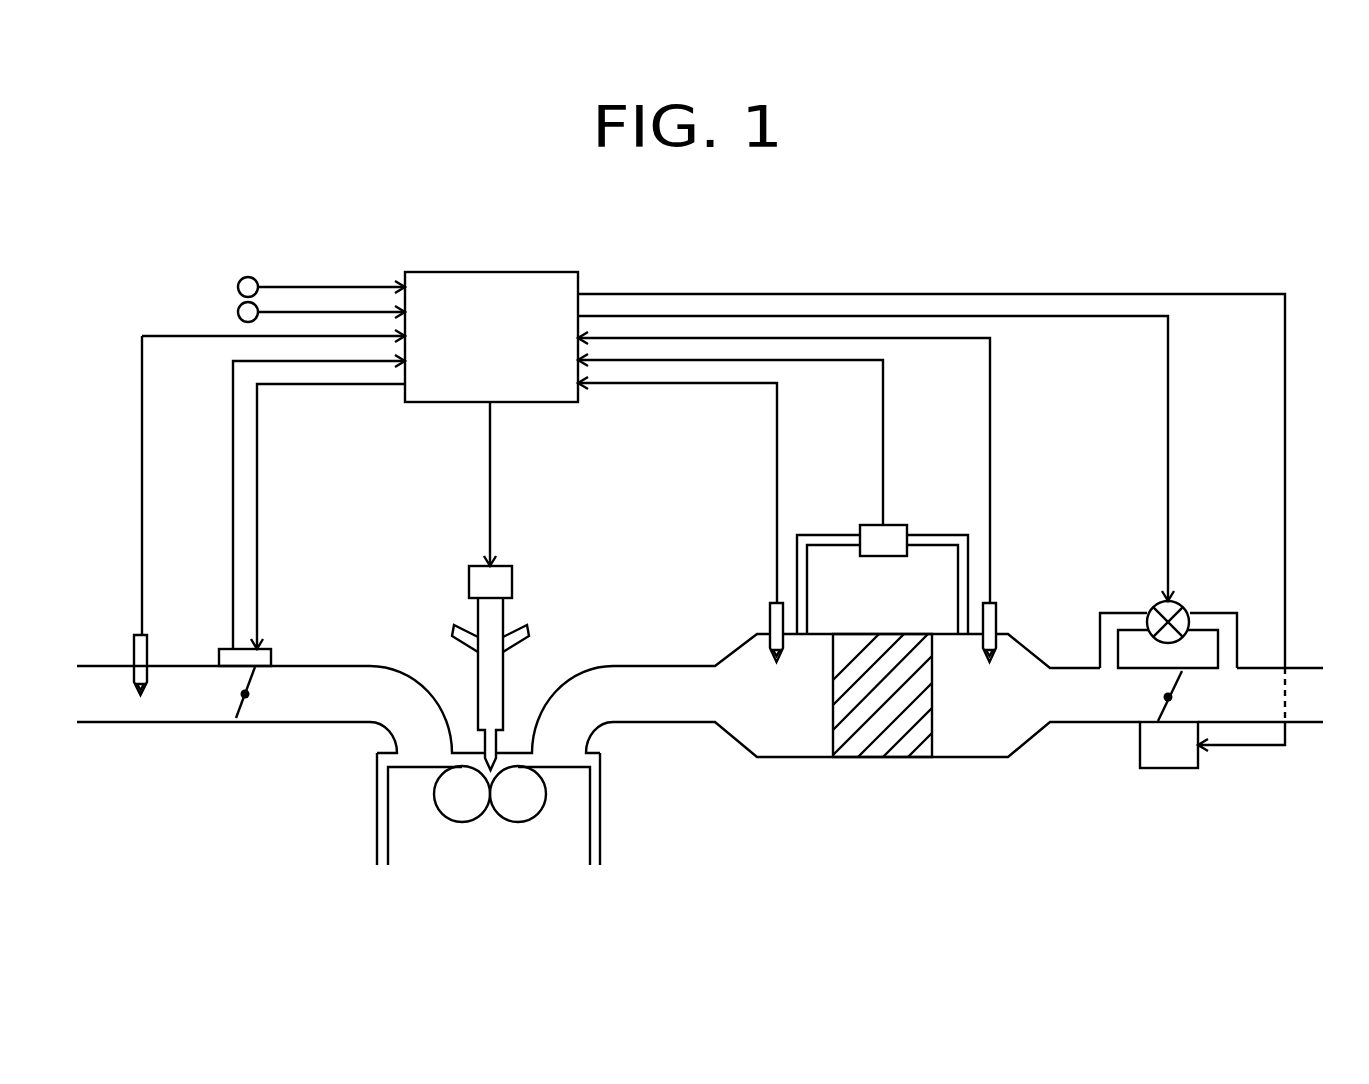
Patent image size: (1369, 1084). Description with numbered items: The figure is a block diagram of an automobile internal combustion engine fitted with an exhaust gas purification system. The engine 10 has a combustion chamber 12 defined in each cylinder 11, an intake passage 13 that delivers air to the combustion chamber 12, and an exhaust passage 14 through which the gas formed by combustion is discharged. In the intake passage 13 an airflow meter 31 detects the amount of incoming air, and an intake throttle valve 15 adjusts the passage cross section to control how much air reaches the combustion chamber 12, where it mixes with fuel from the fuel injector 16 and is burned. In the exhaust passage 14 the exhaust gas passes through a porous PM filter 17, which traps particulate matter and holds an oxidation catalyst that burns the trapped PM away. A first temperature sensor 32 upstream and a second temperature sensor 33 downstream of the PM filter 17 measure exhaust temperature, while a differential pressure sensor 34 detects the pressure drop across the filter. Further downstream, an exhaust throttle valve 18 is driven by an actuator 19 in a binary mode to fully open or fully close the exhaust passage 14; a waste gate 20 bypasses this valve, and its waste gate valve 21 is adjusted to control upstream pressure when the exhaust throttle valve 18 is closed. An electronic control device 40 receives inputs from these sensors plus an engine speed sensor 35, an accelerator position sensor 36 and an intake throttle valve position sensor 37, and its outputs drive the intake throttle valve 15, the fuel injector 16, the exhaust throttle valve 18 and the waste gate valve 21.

The engine 10 is at (753, 248).
The cylinder 11 is at (377, 770).
The combustion chamber 12 is at (458, 798).
The intake passage 13 is at (347, 666).
The exhaust passage 14 is at (647, 666).
The intake throttle valve 15 is at (236, 718).
The fuel injector 16 is at (503, 672).
The PM filter 17 is at (883, 645).
The exhaust throttle valve 18 is at (1158, 713).
The actuator 19 is at (1166, 768).
The waste gate 20 is at (1116, 613).
The waste gate valve 21 is at (1183, 606).
The airflow meter 31 is at (134, 650).
The first temperature sensor 32 is at (770, 614).
The second temperature sensor 33 is at (997, 612).
The differential pressure sensor 34 is at (893, 525).
The engine speed sensor 35 is at (238, 284).
The accelerator position sensor 36 is at (238, 312).
The intake throttle valve position sensor 37 is at (219, 654).
The electronic control device 40 is at (462, 272).